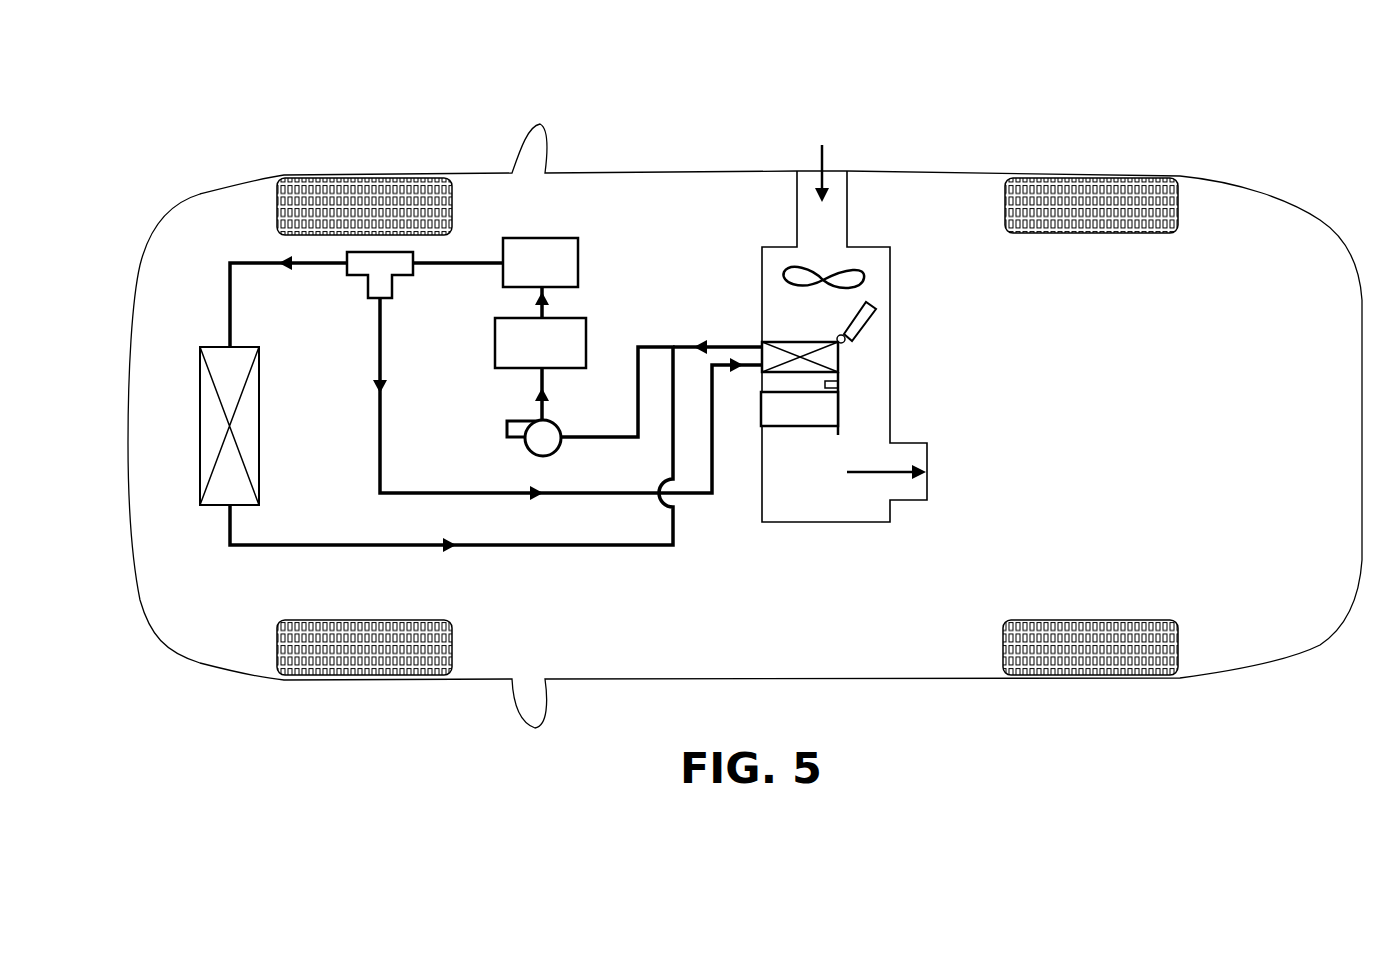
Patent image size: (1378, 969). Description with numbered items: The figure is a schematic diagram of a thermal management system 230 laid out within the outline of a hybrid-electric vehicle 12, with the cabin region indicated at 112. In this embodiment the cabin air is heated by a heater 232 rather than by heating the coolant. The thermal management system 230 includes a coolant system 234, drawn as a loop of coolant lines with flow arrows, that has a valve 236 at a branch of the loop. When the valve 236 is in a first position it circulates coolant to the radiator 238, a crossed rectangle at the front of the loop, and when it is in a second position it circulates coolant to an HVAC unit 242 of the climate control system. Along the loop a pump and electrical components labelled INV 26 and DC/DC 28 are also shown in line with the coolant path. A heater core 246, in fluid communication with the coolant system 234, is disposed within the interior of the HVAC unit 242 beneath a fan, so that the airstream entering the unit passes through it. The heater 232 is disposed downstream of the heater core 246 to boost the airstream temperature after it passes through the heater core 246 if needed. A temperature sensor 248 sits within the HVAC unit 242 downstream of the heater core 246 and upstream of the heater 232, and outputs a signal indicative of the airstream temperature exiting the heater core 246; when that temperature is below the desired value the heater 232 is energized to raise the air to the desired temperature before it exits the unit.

The vehicle 12 is at (472, 174).
The inverter 26 is at (578, 262).
The DC/DC converter 28 is at (586, 343).
The vehicle cabin 112 is at (1260, 255).
The thermal management system 230 is at (610, 197).
The heater 232 is at (838, 408).
The coolant system 234 is at (508, 586).
The valve 236 is at (357, 268).
The radiator 238 is at (200, 426).
The HVAC unit 242 is at (890, 425).
The heater core 246 is at (782, 340).
The temperature sensor 248 is at (838, 384).